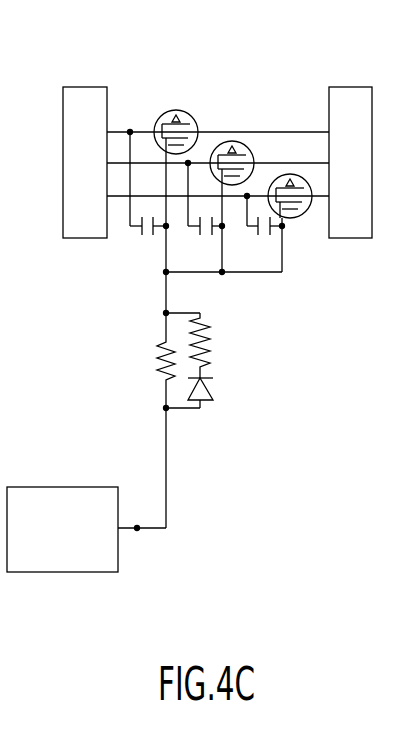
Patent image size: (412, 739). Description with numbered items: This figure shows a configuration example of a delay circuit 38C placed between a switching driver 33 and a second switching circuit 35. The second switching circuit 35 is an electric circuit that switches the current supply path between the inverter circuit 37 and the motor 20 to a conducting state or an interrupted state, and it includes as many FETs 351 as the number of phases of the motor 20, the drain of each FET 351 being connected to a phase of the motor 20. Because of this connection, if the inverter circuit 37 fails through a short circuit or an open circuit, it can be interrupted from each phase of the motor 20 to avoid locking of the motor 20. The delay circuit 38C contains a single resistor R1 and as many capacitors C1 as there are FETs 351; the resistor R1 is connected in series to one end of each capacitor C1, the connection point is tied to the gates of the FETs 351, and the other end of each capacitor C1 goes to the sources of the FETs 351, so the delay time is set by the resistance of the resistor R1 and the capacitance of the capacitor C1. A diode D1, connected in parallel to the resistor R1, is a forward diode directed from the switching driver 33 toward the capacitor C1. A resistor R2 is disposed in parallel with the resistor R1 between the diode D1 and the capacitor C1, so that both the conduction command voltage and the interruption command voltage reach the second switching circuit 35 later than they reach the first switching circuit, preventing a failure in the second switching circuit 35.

The motor 20 is at (350, 86).
The switching driver 33 is at (78, 486).
The second switching circuit 35 is at (218, 156).
The FET 351 is at (187, 112).
The inverter circuit 37 is at (90, 86).
The delay circuit 38C is at (224, 374).
The capacitor C1 is at (141, 238).
The resistor R1 is at (157, 354).
The resistor R2 is at (212, 341).
The diode D1 is at (222, 393).